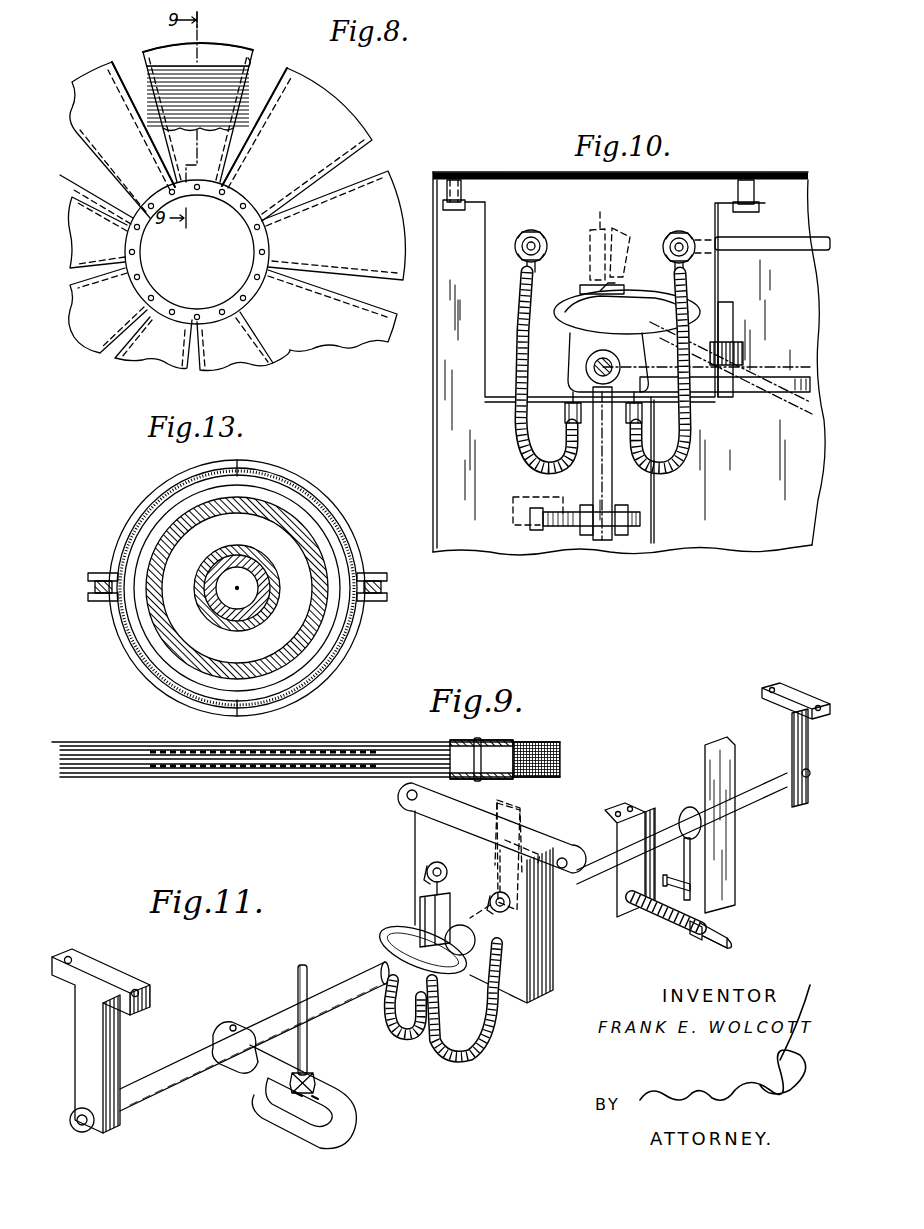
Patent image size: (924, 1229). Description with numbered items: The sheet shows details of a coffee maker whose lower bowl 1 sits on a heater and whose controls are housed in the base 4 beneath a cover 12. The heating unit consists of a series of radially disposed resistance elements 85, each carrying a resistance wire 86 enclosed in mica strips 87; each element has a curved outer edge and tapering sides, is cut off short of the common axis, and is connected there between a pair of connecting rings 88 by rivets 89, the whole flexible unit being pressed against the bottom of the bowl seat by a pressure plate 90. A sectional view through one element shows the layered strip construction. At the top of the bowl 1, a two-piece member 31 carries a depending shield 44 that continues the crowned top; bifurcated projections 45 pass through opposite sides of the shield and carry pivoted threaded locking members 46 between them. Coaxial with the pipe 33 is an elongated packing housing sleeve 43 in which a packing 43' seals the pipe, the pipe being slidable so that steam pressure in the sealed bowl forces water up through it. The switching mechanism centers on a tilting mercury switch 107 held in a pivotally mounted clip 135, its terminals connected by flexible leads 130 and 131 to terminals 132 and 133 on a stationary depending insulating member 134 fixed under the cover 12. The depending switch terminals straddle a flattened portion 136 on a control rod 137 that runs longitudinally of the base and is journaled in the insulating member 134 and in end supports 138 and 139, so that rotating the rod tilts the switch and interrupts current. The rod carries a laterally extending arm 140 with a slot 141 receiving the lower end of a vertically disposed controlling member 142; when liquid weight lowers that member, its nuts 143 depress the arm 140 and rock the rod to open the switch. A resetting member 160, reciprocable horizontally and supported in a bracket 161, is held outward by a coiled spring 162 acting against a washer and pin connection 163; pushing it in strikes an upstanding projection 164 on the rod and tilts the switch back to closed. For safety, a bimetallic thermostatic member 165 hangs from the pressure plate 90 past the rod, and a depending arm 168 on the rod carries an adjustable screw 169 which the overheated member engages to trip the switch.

In FIG. 13, the bowl 1 is at (150, 504).
In FIG. 10, the base 4 is at (427, 396).
In FIG. 10, the cover 12 is at (535, 172).
In FIG. 13, the member 31 is at (122, 530).
In FIG. 13, the pipe 33 is at (262, 576).
In FIG. 13, the packing housing sleeve 43 is at (237, 574).
In FIG. 13, the packing 43' is at (237, 609).
In FIG. 13, the depending shield 44 is at (168, 698).
In FIG. 13, the bifurcated projections 45 is at (95, 573).
In FIG. 13, the threaded locking members 46 is at (95, 588).
In FIG. 8, the resistance elements 85 is at (160, 58).
In FIG. 8, the resistance wires 86 is at (215, 70).
In FIG. 9, the resistance wires 86 is at (305, 745).
In FIG. 8, the mica strips 87 is at (248, 62).
In FIG. 9, the mica strips 87 is at (58, 742).
In FIG. 8, the connecting rings 88 is at (142, 288).
In FIG. 9, the connecting rings 88 is at (460, 740).
In FIG. 8, the rivets 89 is at (190, 196).
In FIG. 9, the rivets 89 is at (482, 745).
In FIG. 8, the pressure plate 90 is at (115, 65).
In FIG. 10, the mercury switch 107 is at (580, 298).
In FIG. 11, the mercury switch 107 is at (460, 975).
In FIG. 10, the flexible lead 130 is at (514, 425).
In FIG. 11, the flexible lead 130 is at (415, 1040).
In FIG. 10, the flexible lead 131 is at (694, 422).
In FIG. 11, the flexible lead 131 is at (482, 1042).
In FIG. 10, the terminal 132 is at (537, 232).
In FIG. 11, the terminal 132 is at (426, 868).
In FIG. 10, the terminal 133 is at (686, 232).
In FIG. 11, the terminal 133 is at (495, 892).
In FIG. 10, the insulating member 134 is at (718, 276).
In FIG. 11, the insulating member 134 is at (405, 855).
In FIG. 11, the clip 135 is at (418, 905).
In FIG. 11, the flattened portion 136 is at (380, 968).
In FIG. 10, the control rod 137 is at (576, 385).
In FIG. 11, the control rod 137 is at (278, 1006).
In FIG. 11, the support 138 is at (100, 1080).
In FIG. 11, the support 139 is at (780, 753).
In FIG. 10, the arm 140 is at (768, 377).
In FIG. 11, the arm 140 is at (340, 1108).
In FIG. 11, the slot 141 is at (315, 1096).
In FIG. 10, the controlling member 142 is at (735, 314).
In FIG. 11, the controlling member 142 is at (308, 1036).
In FIG. 11, the nuts 143 is at (315, 1078).
In FIG. 10, the resetting member 160 is at (770, 238).
In FIG. 11, the resetting member 160 is at (610, 900).
In FIG. 11, the bracket 161 is at (645, 815).
In FIG. 11, the coiled spring 162 is at (680, 935).
In FIG. 11, the washer and pin connection 163 is at (712, 934).
In FIG. 10, the upstanding projection 164 is at (600, 228).
In FIG. 9, the upstanding projection 164 is at (536, 774).
In FIG. 11, the upstanding projection 164 is at (526, 848).
In FIG. 10, the thermostatic member 165 is at (657, 498).
In FIG. 11, the thermostatic member 165 is at (737, 850).
In FIG. 10, the depending arm 168 is at (590, 465).
In FIG. 11, the depending arm 168 is at (700, 882).
In FIG. 10, the adjustable screw 169 is at (555, 530).
In FIG. 11, the adjustable screw 169 is at (682, 868).